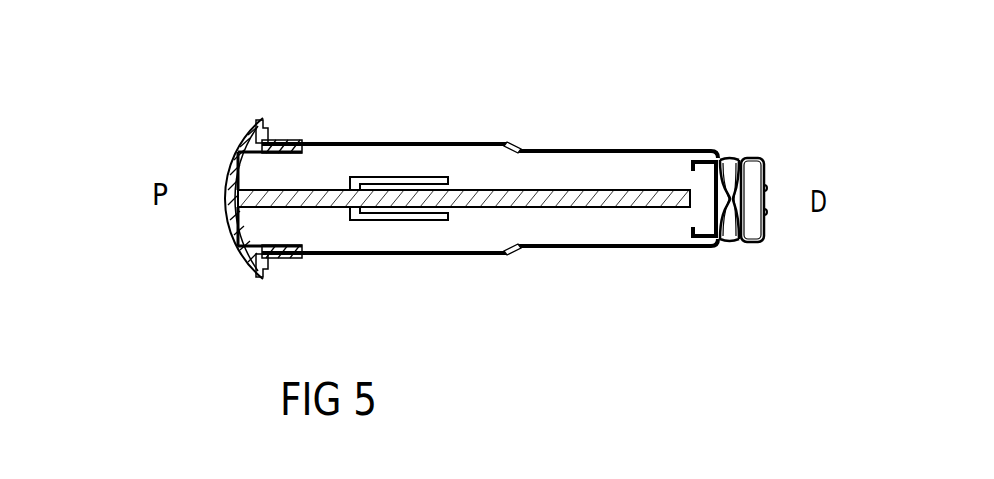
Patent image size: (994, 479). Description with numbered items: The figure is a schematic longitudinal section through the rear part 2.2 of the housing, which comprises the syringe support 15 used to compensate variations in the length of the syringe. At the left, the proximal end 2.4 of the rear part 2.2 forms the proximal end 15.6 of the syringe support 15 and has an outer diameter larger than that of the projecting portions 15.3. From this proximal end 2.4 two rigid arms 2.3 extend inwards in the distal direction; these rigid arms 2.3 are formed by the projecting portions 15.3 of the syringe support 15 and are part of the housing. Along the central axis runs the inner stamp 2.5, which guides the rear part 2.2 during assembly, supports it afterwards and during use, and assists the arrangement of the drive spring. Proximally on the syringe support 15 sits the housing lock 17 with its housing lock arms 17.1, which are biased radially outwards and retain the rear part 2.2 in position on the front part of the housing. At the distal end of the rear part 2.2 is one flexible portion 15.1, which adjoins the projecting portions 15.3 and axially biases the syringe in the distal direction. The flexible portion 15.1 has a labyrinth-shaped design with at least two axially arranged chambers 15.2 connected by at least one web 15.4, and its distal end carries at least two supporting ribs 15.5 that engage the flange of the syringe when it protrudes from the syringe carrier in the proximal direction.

The rear part 2.2 is at (165, 146).
The rigid arms 2.3 is at (490, 160).
The proximal end 2.4 is at (145, 198).
The inner stamp 2.5 is at (560, 200).
The syringe support 15 is at (784, 192).
The flexible portion 15.1 is at (757, 252).
The chambers 15.2 is at (735, 236).
The projecting portions 15.3 is at (475, 160).
The web 15.4 is at (732, 166).
The supporting ribs 15.5 is at (766, 187).
The proximal end of the syringe support 15.6 is at (230, 228).
The housing lock 17 is at (399, 193).
The housing lock arms 17.1 is at (378, 221).